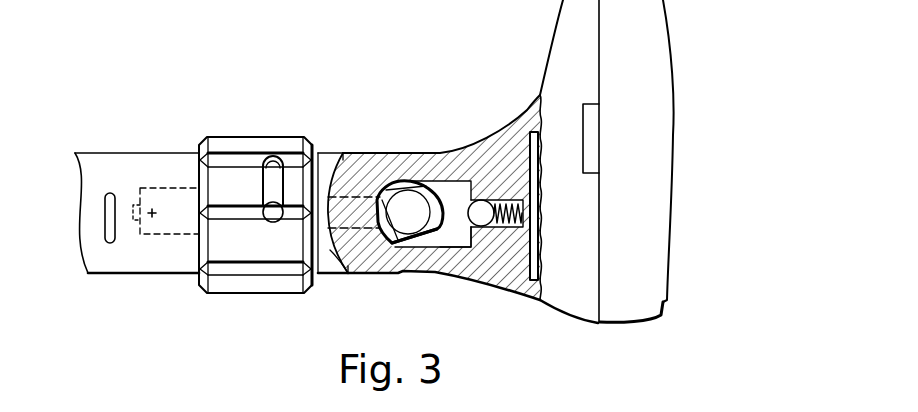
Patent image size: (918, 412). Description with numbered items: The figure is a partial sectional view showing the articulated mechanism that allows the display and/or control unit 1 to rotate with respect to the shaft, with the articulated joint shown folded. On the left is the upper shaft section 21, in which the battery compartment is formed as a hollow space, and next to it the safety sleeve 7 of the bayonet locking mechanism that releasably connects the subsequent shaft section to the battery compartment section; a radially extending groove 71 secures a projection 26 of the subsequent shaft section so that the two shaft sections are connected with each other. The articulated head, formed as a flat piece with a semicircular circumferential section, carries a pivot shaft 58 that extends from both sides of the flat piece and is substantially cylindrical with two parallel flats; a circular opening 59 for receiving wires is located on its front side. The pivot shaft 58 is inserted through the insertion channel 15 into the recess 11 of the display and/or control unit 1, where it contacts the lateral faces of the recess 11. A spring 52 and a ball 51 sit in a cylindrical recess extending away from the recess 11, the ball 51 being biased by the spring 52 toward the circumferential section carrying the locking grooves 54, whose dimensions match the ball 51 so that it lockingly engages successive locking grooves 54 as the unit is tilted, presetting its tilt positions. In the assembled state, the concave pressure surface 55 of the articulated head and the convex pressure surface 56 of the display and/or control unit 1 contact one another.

The display and/or control unit 1 is at (657, 193).
The safety sleeve 7 is at (236, 143).
The recess 11 is at (432, 165).
The insertion channel 15 is at (370, 180).
The upper shaft section 21 is at (121, 163).
The projection 26 is at (276, 218).
The ball 51 is at (483, 207).
The spring 52 is at (509, 204).
The locking grooves 54 is at (473, 240).
The concave pressure surface 55 is at (350, 256).
The convex pressure surface 56 is at (334, 165).
The pivot shaft 58 is at (440, 229).
The circular opening 59 is at (404, 200).
The radially extending groove 71 is at (250, 186).